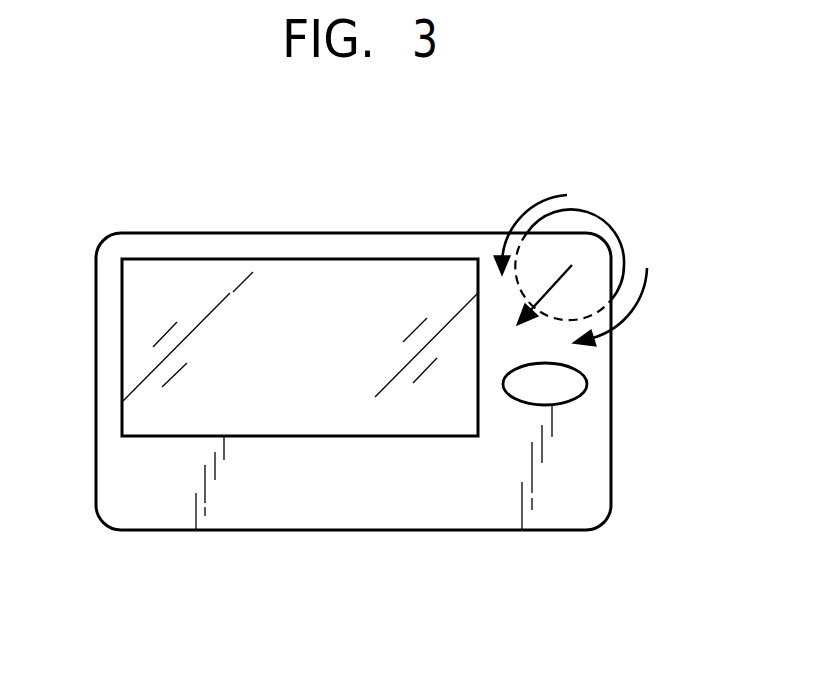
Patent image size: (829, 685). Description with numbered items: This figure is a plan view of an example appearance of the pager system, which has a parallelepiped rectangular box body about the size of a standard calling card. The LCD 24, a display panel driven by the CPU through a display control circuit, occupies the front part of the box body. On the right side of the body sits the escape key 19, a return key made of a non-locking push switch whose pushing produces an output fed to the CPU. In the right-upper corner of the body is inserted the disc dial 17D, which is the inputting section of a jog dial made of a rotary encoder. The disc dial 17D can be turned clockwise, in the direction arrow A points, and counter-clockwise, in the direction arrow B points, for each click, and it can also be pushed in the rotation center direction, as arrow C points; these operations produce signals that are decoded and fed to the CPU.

The LCD 24 is at (293, 259).
The disc dial 17D is at (612, 226).
The escape key 19 is at (580, 402).
The arrow A is at (637, 303).
The arrow B is at (541, 198).
The arrow C is at (523, 306).